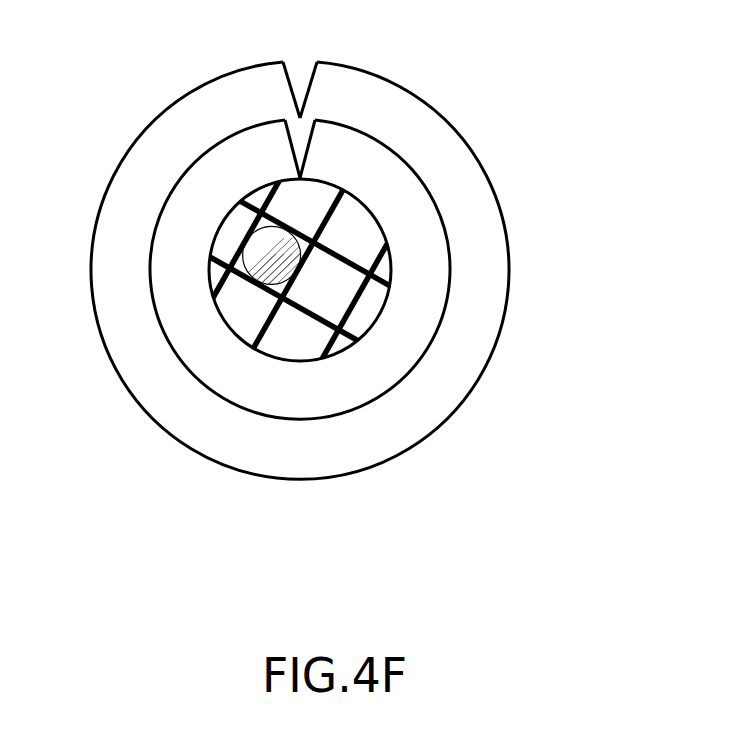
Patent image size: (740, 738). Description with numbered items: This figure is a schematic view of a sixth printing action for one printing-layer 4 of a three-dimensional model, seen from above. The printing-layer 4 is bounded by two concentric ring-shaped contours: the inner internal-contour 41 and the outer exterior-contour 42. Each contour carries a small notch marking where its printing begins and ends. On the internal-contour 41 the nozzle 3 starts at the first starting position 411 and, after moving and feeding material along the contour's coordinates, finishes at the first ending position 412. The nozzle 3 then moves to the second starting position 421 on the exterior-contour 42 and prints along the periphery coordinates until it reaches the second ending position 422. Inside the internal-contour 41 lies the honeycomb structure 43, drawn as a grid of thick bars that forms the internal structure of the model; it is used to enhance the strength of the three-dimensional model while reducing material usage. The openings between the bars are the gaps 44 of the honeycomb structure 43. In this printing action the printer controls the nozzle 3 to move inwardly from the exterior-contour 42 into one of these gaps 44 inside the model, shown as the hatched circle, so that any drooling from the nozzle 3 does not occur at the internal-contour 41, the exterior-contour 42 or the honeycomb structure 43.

The printing-layer 4 is at (623, 91).
The internal-contour 41 is at (422, 230).
The exterior-contour 42 is at (483, 288).
The first starting position 411 is at (308, 153).
The first ending position 412 is at (291, 152).
The second starting position 421 is at (312, 90).
The second ending position 422 is at (287, 85).
The honeycomb structure 43 is at (375, 312).
The gap 44 is at (322, 295).
The nozzle 3 is at (268, 257).